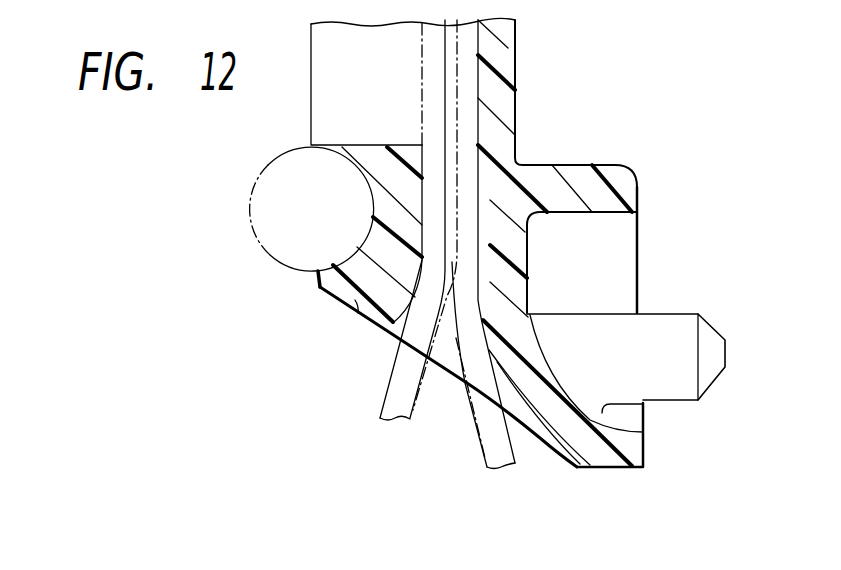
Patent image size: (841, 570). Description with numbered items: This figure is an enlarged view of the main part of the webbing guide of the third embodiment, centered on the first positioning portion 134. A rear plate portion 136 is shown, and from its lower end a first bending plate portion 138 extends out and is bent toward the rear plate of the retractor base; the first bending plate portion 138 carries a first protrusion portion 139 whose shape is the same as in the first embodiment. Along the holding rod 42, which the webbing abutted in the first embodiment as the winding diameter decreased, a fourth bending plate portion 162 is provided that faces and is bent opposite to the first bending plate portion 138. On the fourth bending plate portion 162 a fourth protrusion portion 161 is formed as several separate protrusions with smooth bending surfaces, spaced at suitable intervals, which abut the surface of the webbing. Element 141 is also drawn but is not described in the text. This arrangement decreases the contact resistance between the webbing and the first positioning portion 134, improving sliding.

The holding rod 42 is at (250, 198).
The first positioning portion 134 is at (320, 297).
The rear plate portion 136 is at (508, 78).
The first bending plate portion 138 is at (632, 452).
The first protrusion portion 139 is at (548, 455).
The wire strips 141 is at (434, 355).
The fourth protrusion portion 161 is at (397, 325).
The fourth bending plate portion 162 is at (355, 302).